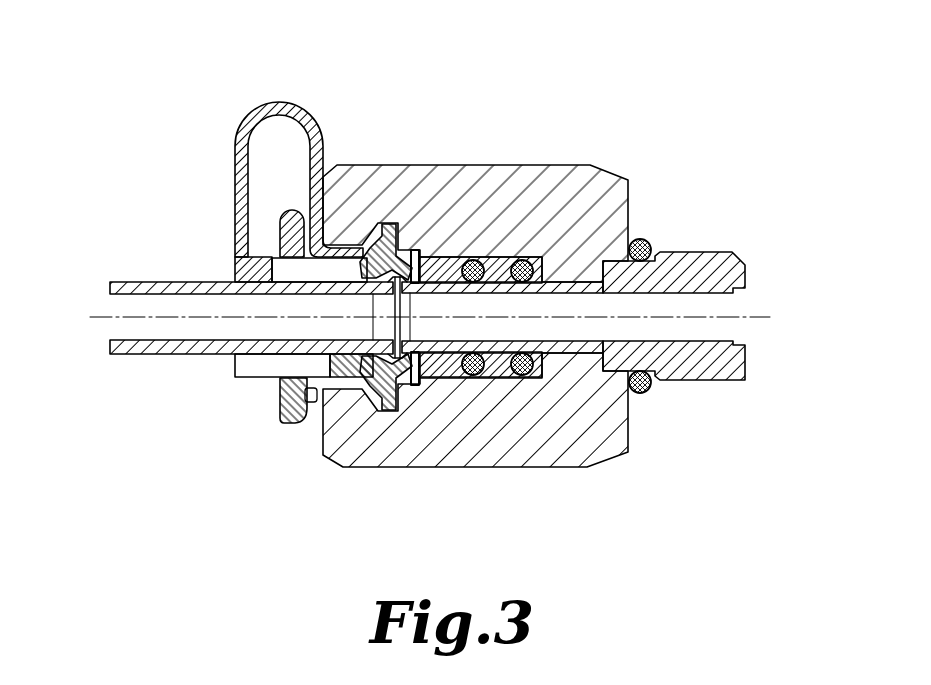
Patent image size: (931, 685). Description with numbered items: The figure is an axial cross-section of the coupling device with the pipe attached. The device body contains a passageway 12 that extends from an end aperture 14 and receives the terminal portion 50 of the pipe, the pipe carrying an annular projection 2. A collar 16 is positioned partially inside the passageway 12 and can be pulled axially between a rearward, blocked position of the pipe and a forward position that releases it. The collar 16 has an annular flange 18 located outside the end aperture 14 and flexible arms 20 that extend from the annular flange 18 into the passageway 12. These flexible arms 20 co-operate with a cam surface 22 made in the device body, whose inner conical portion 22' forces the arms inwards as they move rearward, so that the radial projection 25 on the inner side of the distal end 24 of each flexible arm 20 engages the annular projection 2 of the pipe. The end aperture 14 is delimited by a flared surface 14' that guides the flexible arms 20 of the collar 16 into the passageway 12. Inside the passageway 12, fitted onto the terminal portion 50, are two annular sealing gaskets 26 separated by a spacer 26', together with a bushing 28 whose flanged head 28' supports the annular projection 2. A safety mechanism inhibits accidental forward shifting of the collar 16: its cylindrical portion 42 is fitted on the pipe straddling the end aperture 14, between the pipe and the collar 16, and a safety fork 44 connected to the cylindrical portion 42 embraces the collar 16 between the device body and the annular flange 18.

The annular projection 2 is at (560, 237).
The passageway 12 is at (570, 307).
The end aperture 14 is at (386, 178).
The flared surface 14' is at (357, 439).
The collar 16 is at (292, 422).
The annular flange 18 is at (280, 402).
The flexible arms 20 is at (343, 467).
The cam surface 22 is at (426, 193).
The inner conical portion 22' is at (453, 431).
The distal end 24 is at (445, 258).
The radial projection 25 is at (373, 297).
The annular sealing gasket 26 is at (653, 349).
The spacer 26' is at (635, 453).
The bushing 28 is at (550, 406).
The flanged head 28' is at (561, 225).
The cylindrical portion 42 is at (235, 372).
The safety fork 44 is at (291, 101).
The terminal portion 50 is at (150, 282).